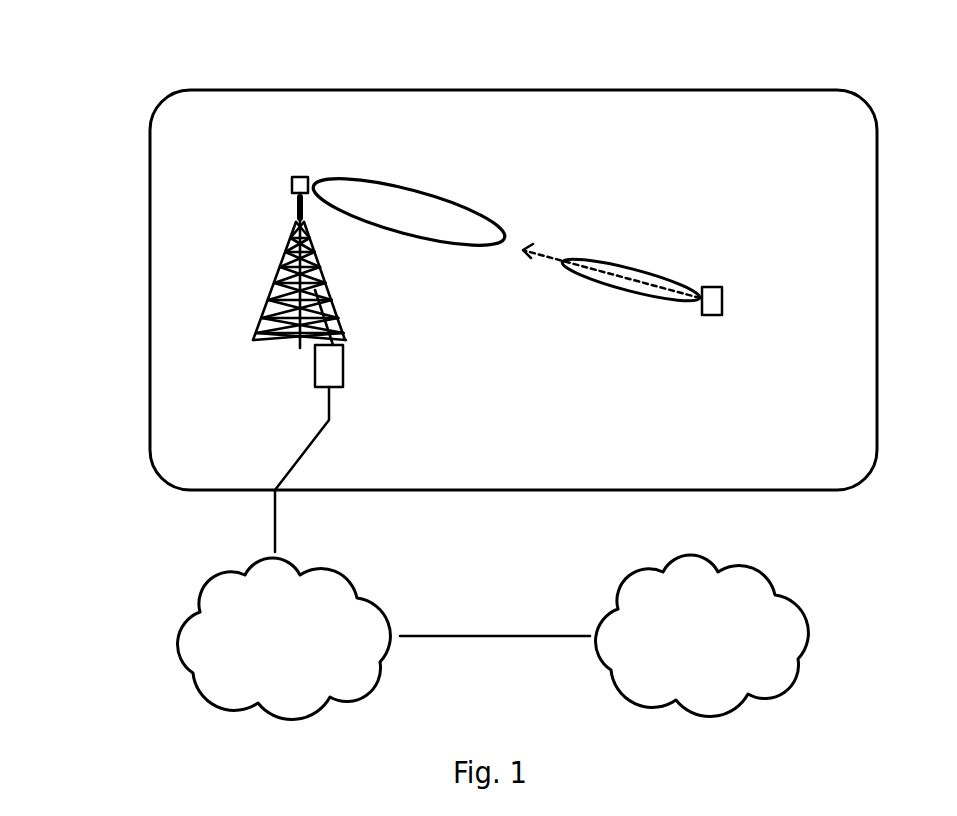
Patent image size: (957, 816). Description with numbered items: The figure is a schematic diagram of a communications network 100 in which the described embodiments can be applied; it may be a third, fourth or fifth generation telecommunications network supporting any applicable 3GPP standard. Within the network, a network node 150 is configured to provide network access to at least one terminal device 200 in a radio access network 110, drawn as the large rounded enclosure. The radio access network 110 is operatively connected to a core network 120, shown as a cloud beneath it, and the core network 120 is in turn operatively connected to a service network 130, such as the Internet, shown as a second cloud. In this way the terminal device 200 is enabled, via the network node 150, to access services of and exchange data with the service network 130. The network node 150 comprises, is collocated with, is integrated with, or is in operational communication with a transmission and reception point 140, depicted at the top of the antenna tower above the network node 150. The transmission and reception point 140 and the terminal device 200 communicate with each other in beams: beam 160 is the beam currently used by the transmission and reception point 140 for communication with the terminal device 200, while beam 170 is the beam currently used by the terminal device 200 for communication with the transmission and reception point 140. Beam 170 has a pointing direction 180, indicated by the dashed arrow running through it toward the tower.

The communications network 100 is at (236, 63).
The radio access network 110 is at (150, 327).
The core network 120 is at (300, 647).
The service network 130 is at (728, 652).
The transmission and reception point 140 is at (292, 186).
The network node 150 is at (329, 370).
The beam 160 is at (423, 158).
The beam 170 is at (632, 265).
The pointing direction 180 is at (553, 262).
The terminal device 200 is at (722, 297).